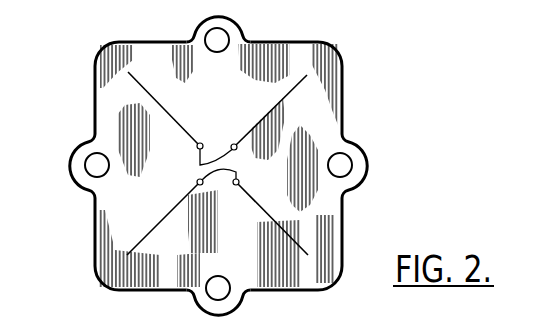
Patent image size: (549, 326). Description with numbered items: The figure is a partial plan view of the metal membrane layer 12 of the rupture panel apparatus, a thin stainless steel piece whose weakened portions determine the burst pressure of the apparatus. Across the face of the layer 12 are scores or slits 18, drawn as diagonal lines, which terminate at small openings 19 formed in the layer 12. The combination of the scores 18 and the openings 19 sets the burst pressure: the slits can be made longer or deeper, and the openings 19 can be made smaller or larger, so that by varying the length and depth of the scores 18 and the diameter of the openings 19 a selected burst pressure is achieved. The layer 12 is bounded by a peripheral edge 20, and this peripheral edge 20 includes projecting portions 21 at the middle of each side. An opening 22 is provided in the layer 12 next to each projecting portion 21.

The metal membrane 12 is at (342, 113).
The score or slit 18 is at (257, 122).
The opening 19 is at (200, 165).
The peripheral edge 20 is at (96, 122).
The projecting portion 21 is at (231, 20).
The opening 22 is at (212, 40).